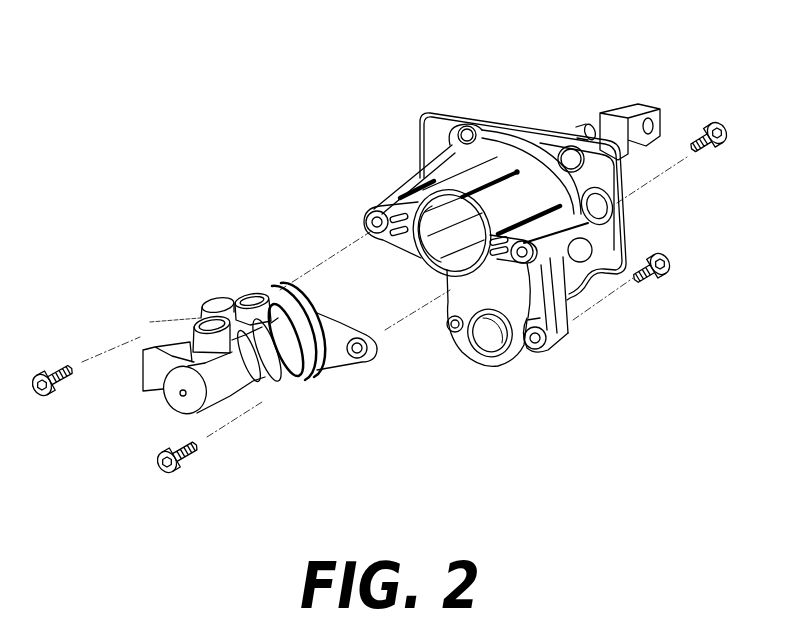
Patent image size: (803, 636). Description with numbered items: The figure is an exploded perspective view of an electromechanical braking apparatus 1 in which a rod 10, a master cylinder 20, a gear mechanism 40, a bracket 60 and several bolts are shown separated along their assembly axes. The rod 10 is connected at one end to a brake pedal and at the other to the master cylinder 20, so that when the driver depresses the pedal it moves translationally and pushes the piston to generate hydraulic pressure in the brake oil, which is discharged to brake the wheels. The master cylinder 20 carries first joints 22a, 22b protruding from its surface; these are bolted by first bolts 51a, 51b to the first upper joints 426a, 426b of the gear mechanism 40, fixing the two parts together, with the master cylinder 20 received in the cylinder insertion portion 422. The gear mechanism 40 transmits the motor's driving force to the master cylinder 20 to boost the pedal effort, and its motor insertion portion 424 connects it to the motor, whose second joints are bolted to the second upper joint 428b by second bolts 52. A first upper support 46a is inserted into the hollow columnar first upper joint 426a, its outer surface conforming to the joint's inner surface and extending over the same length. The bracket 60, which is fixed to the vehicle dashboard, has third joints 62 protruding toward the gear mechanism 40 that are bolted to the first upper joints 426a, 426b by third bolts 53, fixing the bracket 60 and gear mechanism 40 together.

The electromechanical braking apparatus 1 is at (56, 45).
The rod 10 is at (604, 116).
The master cylinder 20 is at (141, 337).
The first joint 22a is at (216, 302).
The first joint 22b is at (383, 349).
The gear mechanism 40 is at (398, 176).
The first upper support 46a is at (368, 221).
The first bolt 51a is at (53, 371).
The first bolt 51b is at (187, 460).
The second bolt 52 is at (670, 272).
The third bolt 53 is at (722, 141).
The bracket 60 is at (519, 126).
The third joint 62 is at (614, 205).
The cylinder insertion portion 422 is at (497, 170).
The motor insertion portion 424 is at (513, 352).
The first upper joint 426a is at (388, 201).
The first upper joint 426b is at (570, 226).
The second upper joint 428b is at (563, 336).